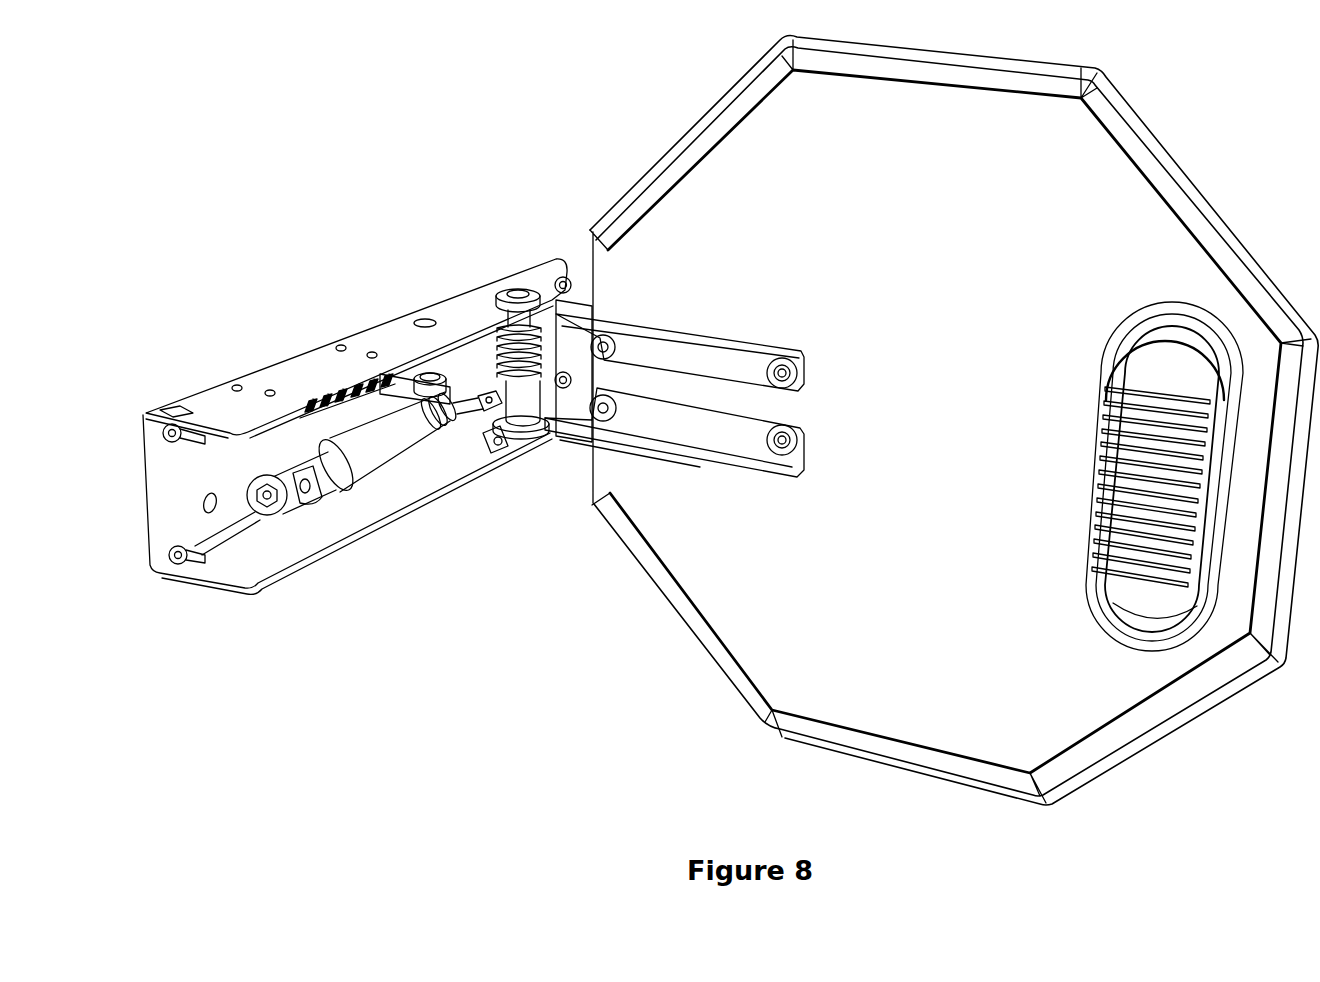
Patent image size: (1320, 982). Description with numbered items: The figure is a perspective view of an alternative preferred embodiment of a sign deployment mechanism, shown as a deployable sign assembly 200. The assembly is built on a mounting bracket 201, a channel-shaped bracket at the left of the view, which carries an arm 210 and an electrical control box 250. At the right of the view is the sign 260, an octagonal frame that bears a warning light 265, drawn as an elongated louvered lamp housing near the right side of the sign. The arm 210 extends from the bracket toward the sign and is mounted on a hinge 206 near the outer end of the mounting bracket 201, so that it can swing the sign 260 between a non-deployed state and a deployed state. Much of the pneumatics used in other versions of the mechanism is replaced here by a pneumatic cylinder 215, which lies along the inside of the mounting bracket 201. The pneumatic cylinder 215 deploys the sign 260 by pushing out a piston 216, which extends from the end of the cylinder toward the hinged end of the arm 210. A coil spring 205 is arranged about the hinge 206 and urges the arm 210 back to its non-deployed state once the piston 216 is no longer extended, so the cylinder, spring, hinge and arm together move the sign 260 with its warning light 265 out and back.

The deployable sign assembly 200 is at (378, 141).
The mounting bracket 201 is at (327, 370).
The coil spring 205 is at (517, 345).
The hinge 206 is at (517, 294).
The arm 210 is at (577, 405).
The pneumatic cylinder 215 is at (377, 455).
The piston 216 is at (473, 405).
The electrical control box 250 is at (310, 430).
The sign 260 is at (906, 219).
The warning light 265 is at (1170, 366).